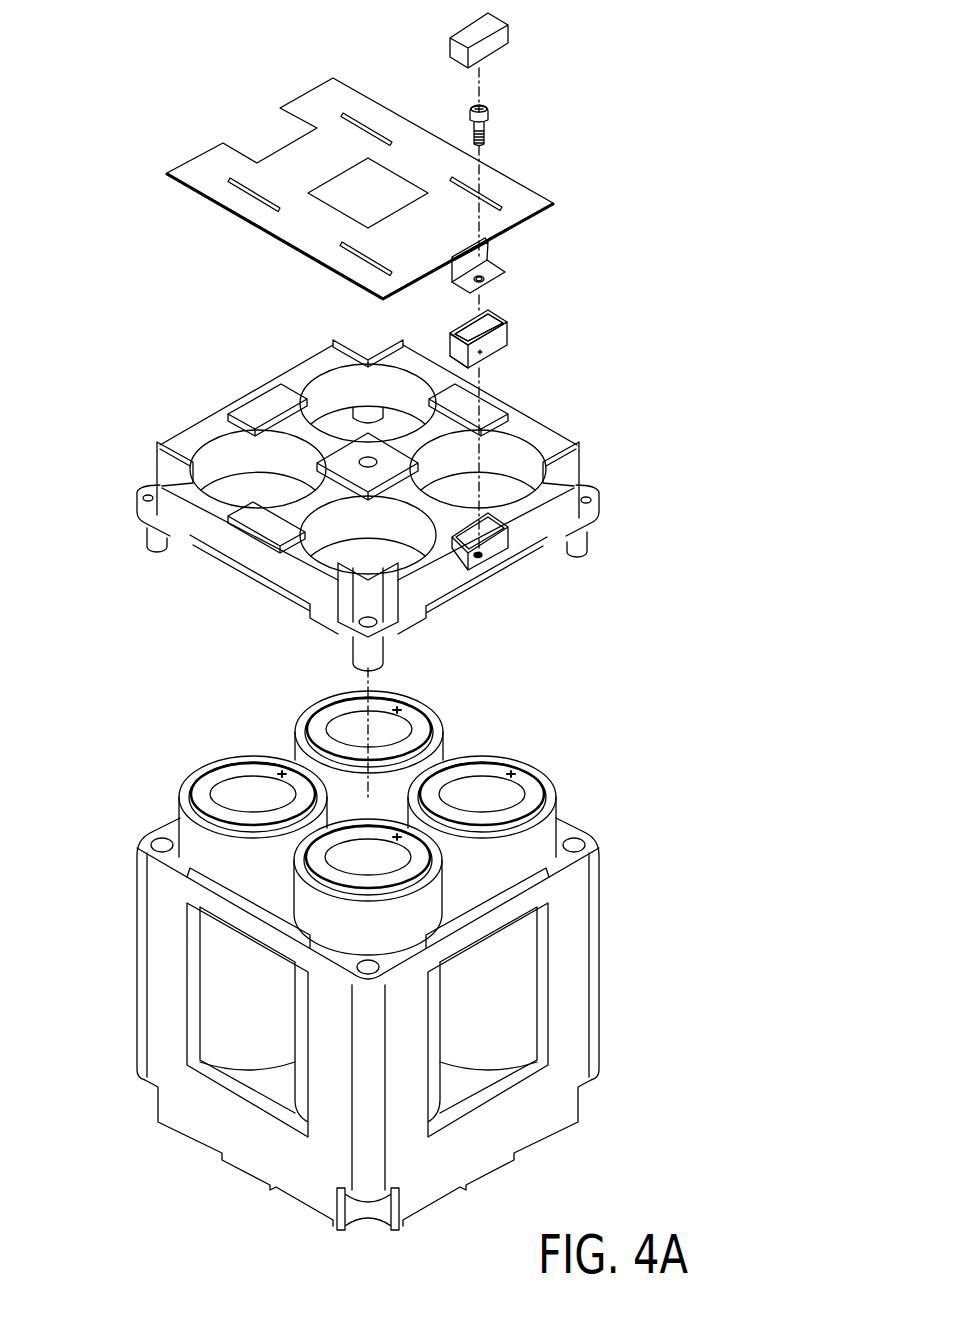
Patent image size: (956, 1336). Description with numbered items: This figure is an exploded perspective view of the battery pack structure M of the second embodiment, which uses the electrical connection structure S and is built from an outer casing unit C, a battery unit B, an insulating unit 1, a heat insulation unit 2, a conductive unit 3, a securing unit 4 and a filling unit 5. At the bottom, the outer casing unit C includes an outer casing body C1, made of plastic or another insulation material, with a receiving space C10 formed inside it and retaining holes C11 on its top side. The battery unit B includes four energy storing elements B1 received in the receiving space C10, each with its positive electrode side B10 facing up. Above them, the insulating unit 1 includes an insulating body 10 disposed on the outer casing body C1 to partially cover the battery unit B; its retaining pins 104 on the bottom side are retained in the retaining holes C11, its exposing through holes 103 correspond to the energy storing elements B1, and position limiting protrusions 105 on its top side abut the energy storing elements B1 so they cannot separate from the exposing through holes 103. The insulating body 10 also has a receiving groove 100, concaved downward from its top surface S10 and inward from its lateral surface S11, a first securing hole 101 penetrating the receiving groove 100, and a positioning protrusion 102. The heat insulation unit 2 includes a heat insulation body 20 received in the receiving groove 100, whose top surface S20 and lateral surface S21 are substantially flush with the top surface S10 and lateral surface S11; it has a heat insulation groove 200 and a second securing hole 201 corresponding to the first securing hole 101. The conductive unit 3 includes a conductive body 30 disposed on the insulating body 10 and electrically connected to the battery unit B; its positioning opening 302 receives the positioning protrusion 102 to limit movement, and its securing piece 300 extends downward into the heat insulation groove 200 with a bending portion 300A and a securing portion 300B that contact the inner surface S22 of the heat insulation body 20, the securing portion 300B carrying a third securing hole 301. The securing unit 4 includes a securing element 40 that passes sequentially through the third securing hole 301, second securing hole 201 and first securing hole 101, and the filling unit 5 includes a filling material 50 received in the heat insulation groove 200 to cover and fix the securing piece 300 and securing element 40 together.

The battery pack structure M is at (86, 51).
The electrical connection structure S is at (174, 293).
The filling unit 5 is at (522, 40).
The filling material 50 is at (495, 42).
The securing unit 4 is at (530, 125).
The securing element 40 is at (484, 138).
The conductive unit 3 is at (397, 173).
The conductive body 30 is at (386, 173).
The positioning opening 302 is at (348, 192).
The securing piece 300 is at (543, 251).
The bending portion 300A is at (490, 253).
The securing portion 300B is at (502, 272).
The third securing hole 301 is at (477, 278).
The heat insulation unit 2 is at (492, 324).
The heat insulation body 20 is at (479, 324).
The top surface of the heat insulation body S20 is at (463, 321).
The lateral surface of the heat insulation body S21 is at (503, 333).
The inner surface of the heat insulation body S22 is at (460, 331).
The heat insulation groove 200 is at (449, 367).
The second securing hole 201 is at (484, 356).
The insulating unit 1 is at (405, 491).
The insulating body 10 is at (400, 491).
The positioning protrusion 102 is at (353, 452).
The exposing through hole 103 is at (227, 463).
The top surface of the insulating body S10 is at (445, 548).
The position limiting protrusion 105 is at (275, 530).
The retaining pin 104 is at (583, 539).
The receiving groove 100 is at (493, 548).
The first securing hole 101 is at (481, 557).
The lateral surface of the insulating body S11 is at (445, 582).
The battery unit B is at (421, 823).
The energy storing element B1 is at (408, 823).
The positive electrode side B10 is at (480, 788).
The outer casing unit C is at (412, 1024).
The outer casing body C1 is at (403, 1024).
The retaining hole C11 is at (578, 845).
The receiving space C10 is at (477, 1090).